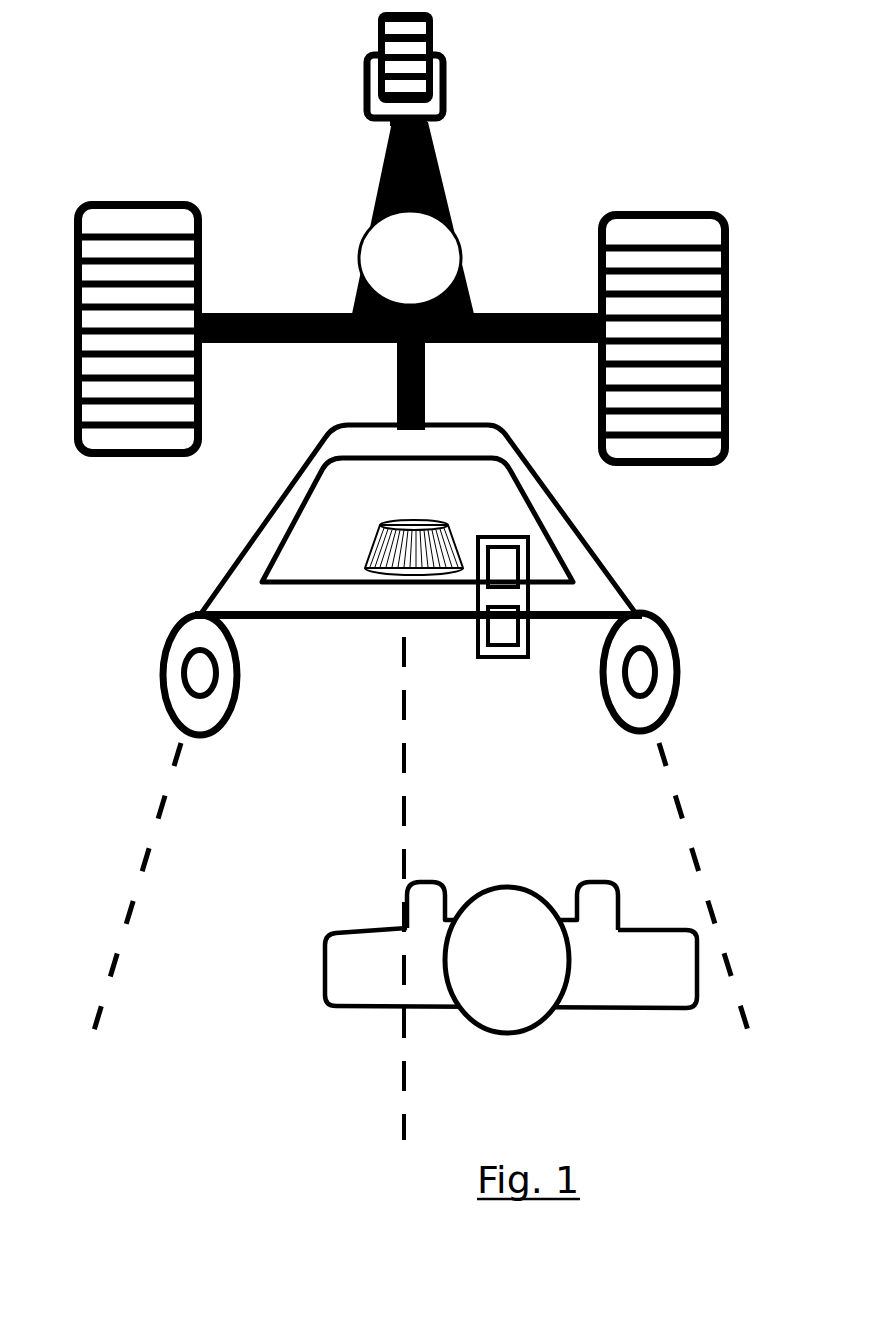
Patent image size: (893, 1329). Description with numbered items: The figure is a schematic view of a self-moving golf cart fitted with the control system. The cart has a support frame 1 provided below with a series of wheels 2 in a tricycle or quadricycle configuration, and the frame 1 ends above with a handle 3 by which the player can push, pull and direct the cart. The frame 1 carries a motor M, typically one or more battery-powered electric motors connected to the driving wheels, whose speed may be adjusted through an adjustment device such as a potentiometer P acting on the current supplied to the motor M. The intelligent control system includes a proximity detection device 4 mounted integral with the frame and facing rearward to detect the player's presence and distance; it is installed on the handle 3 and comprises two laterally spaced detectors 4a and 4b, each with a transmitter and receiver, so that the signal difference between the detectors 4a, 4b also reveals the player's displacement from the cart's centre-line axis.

The support frame 1 is at (436, 143).
The wheels 2 is at (731, 183).
The handle 3 is at (588, 585).
The proximity detection device 4 is at (504, 658).
The detector 4a is at (178, 645).
The detector 4b is at (652, 640).
The motor M is at (410, 263).
The potentiometer P is at (380, 556).